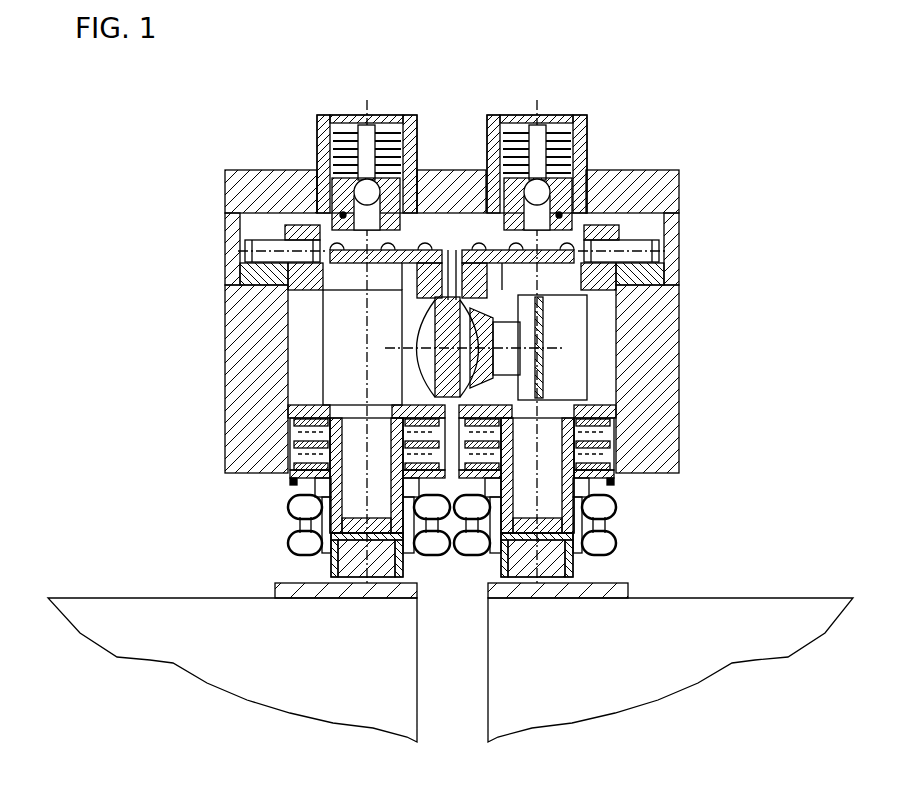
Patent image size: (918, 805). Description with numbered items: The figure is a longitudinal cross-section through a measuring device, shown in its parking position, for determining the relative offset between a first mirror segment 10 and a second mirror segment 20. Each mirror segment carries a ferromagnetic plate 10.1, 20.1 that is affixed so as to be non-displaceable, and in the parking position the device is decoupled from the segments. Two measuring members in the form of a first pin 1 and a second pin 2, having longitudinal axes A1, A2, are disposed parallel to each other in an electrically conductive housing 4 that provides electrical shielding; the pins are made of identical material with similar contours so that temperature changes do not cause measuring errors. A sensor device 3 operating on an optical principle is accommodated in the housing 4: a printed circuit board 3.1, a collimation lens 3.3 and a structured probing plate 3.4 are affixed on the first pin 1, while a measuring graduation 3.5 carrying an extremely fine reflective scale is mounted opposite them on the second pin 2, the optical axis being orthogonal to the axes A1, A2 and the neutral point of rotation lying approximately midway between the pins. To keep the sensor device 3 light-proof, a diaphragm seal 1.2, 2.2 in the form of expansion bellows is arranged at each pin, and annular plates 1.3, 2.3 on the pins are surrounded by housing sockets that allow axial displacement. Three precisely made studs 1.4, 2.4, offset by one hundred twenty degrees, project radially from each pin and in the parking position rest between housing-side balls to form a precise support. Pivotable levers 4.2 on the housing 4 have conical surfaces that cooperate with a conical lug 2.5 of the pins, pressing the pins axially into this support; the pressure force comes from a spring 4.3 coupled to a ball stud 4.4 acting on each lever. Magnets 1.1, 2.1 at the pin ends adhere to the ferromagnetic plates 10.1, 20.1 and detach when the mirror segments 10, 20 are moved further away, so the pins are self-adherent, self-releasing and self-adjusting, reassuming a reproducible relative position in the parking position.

The first pin 1 is at (366, 488).
The magnet 1.1 is at (355, 568).
The diaphragm seal 1.2 is at (328, 503).
The annular plate 1.3 is at (300, 430).
The stud 1.4 is at (262, 252).
The second pin 2 is at (536, 488).
The magnet 2.1 is at (580, 572).
The diaphragm seal 2.2 is at (590, 510).
The annular plate 2.3 is at (613, 438).
The stud 2.4 is at (648, 248).
The conical lug 2.5 is at (615, 207).
The sensor device 3 is at (590, 337).
The printed circuit board 3.1 is at (613, 327).
The collimation lens 3.3 is at (452, 349).
The probing plate 3.4 is at (462, 300).
The measuring graduation 3.5 is at (472, 380).
The housing 4 is at (650, 413).
The lever 4.2 is at (560, 187).
The spring 4.3 is at (510, 166).
The ball stud 4.4 is at (542, 127).
The first mirror segment 10 is at (366, 671).
The ferromagnetic plate 10.1 is at (278, 590).
The second mirror segment 20 is at (552, 671).
The ferromagnetic plate 20.1 is at (622, 592).
The longitudinal axis A1 is at (372, 104).
The longitudinal axis A2 is at (542, 104).